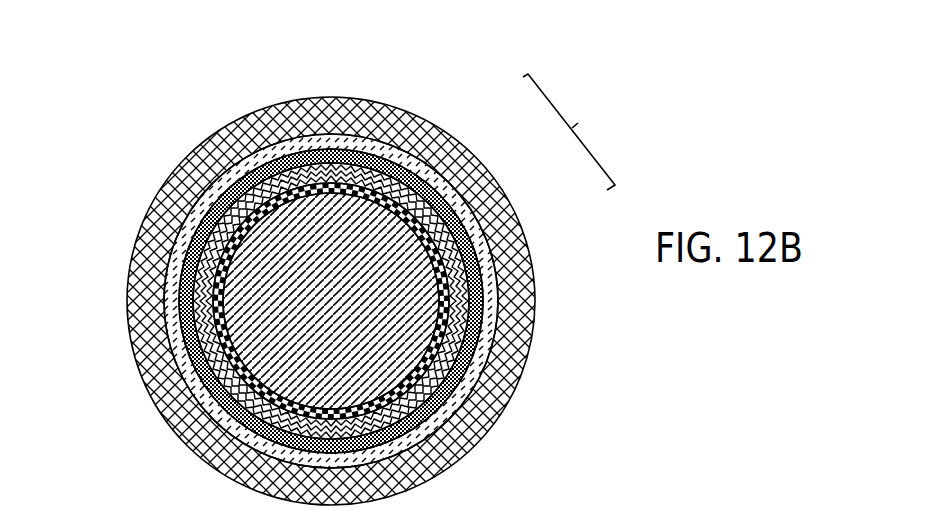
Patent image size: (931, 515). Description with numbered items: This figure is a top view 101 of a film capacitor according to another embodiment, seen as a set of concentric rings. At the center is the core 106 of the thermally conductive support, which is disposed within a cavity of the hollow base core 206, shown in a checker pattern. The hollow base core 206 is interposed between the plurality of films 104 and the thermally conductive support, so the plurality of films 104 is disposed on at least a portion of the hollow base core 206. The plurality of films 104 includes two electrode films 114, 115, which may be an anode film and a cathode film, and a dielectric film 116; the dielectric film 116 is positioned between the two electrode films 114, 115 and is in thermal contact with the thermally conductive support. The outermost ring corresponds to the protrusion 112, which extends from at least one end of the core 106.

The top view 101 is at (126, 143).
The plurality of films 104 is at (572, 132).
The core 106 is at (352, 318).
The protrusion 112 is at (530, 294).
The electrode film 114 is at (377, 183).
The electrode film 115 is at (486, 236).
The dielectric film 116 is at (438, 188).
The hollow base core 206 is at (208, 273).